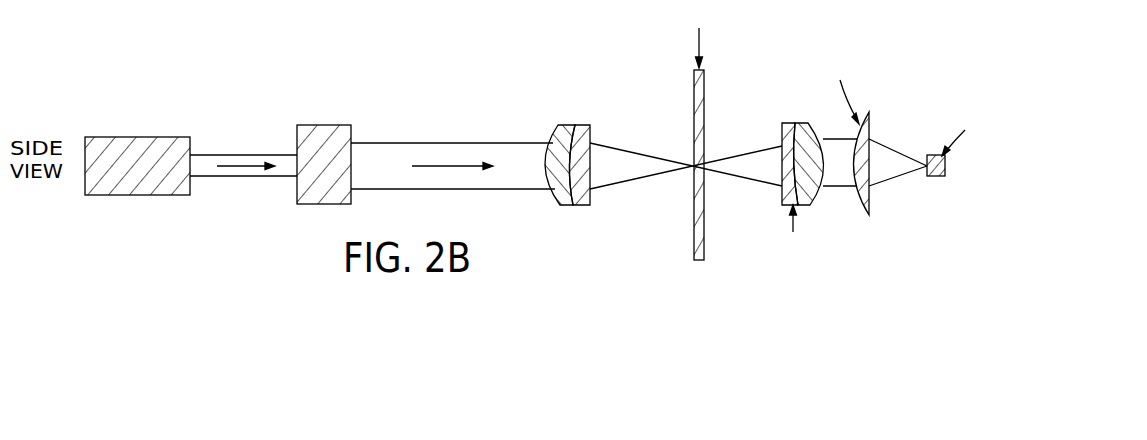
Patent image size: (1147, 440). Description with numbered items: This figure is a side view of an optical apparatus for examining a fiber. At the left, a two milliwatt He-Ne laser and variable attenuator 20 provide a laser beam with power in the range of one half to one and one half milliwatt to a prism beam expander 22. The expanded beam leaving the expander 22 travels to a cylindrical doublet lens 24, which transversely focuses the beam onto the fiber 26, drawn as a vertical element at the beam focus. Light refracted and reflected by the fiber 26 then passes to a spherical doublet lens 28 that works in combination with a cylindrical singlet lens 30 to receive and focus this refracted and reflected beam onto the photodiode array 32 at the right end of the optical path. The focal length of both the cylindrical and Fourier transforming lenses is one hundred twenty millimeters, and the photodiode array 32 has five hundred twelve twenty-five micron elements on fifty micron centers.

The He-Ne laser and variable attenuator 20 is at (157, 137).
The prism beam expander 22 is at (340, 125).
The cylindrical doublet lens 24 is at (578, 125).
The fiber 26 is at (694, 110).
The spherical doublet lens 28 is at (793, 123).
The cylindrical singlet lens 30 is at (872, 205).
The photodiode array 32 is at (945, 170).